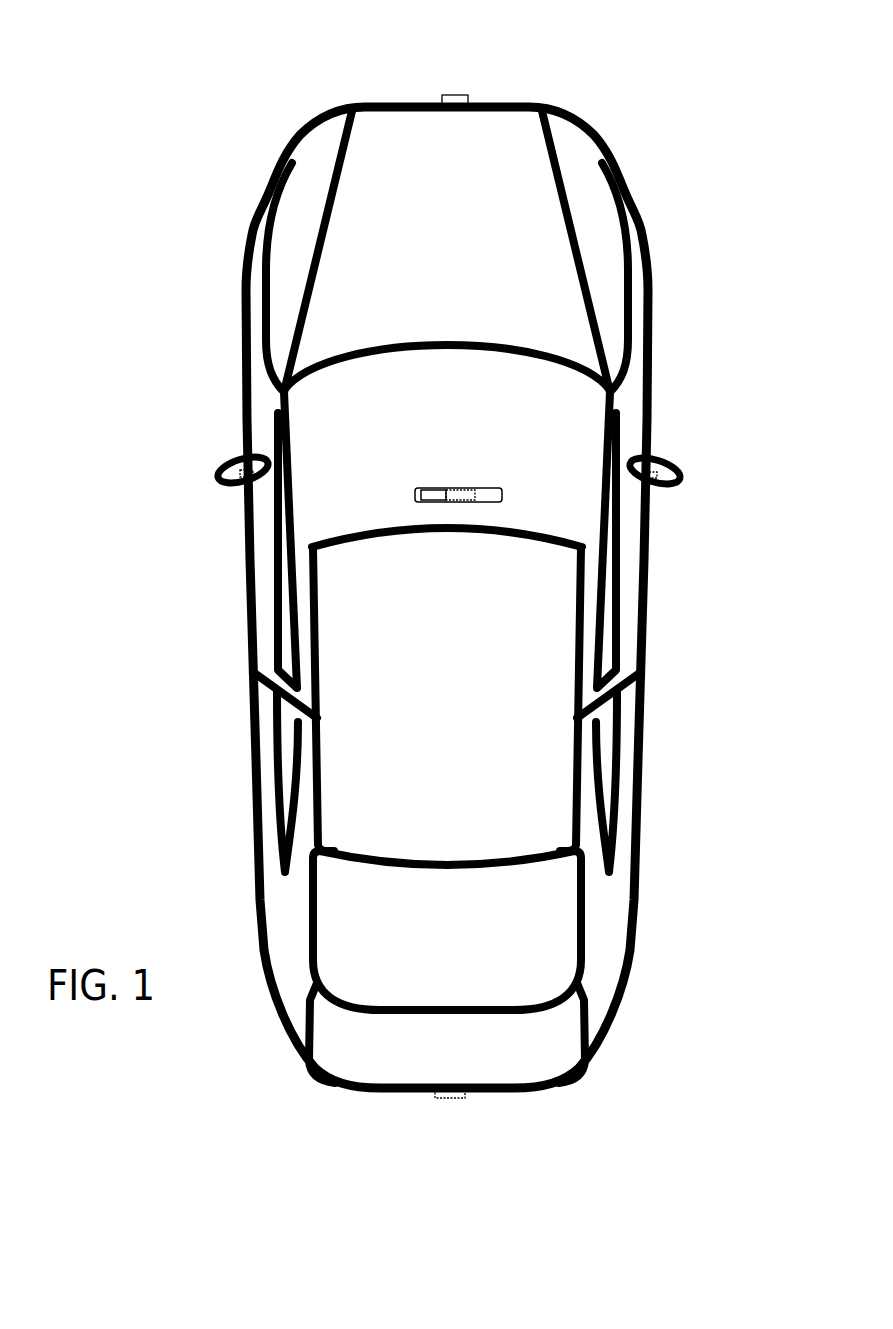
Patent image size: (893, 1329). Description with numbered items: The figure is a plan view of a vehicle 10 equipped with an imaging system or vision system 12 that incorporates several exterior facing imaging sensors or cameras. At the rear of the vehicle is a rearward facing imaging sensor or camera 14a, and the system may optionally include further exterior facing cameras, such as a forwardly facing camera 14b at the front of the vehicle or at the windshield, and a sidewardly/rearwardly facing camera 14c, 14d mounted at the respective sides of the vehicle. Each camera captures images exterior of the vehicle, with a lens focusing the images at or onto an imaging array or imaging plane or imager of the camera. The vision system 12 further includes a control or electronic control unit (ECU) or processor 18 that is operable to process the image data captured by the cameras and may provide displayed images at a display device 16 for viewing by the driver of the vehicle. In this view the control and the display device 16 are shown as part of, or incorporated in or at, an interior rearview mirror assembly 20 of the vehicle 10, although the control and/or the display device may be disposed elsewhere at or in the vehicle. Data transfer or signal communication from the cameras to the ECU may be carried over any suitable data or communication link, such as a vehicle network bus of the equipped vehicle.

The vehicle 10 is at (186, 194).
The vision system 12 is at (390, 1123).
The rearward facing camera 14a is at (465, 1098).
The forwardly facing camera 14b is at (460, 95).
The sidewardly/rearwardly facing camera 14c is at (238, 467).
The sidewardly/rearwardly facing camera 14d is at (657, 473).
The display device 16 is at (432, 492).
The electronic control unit 18 is at (453, 487).
The interior rearview mirror assembly 20 is at (502, 488).